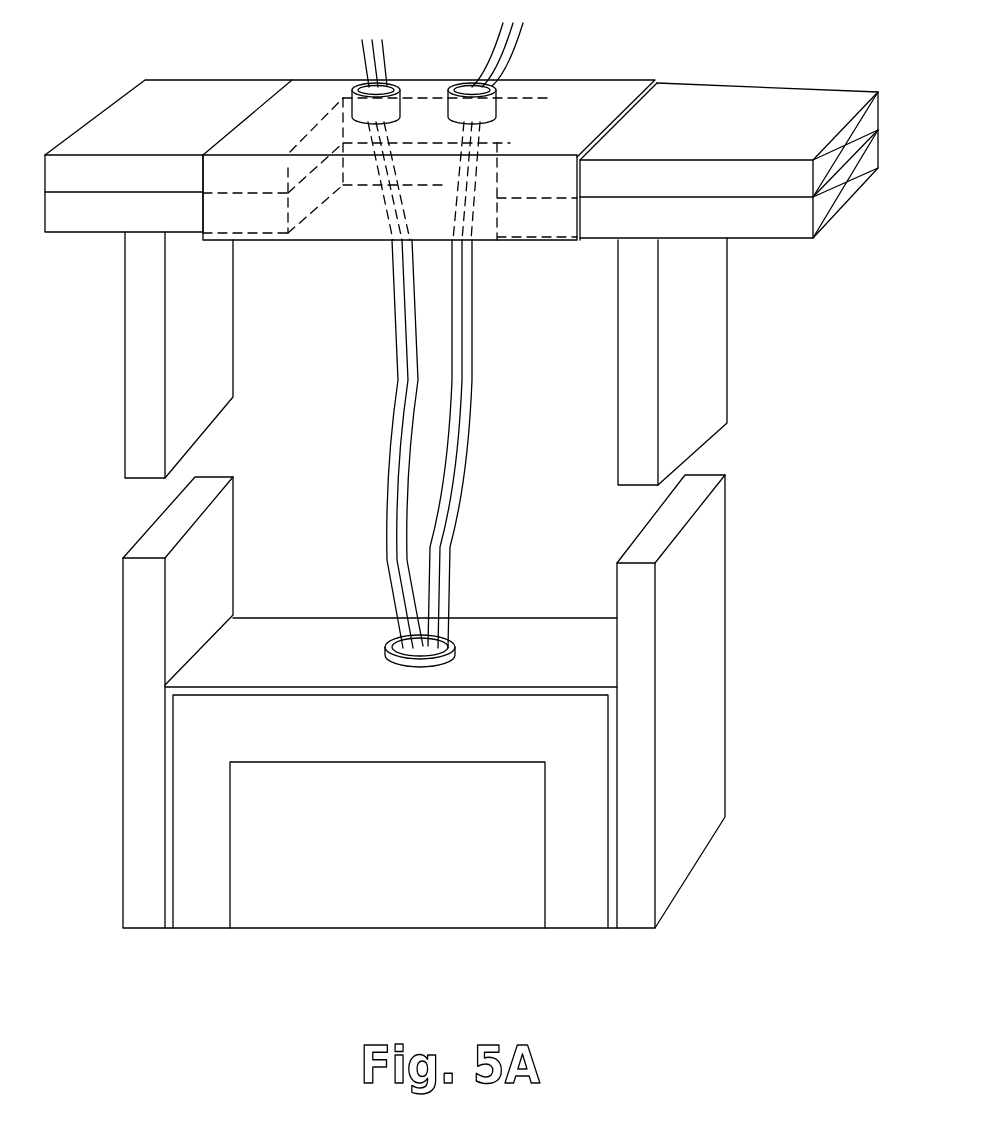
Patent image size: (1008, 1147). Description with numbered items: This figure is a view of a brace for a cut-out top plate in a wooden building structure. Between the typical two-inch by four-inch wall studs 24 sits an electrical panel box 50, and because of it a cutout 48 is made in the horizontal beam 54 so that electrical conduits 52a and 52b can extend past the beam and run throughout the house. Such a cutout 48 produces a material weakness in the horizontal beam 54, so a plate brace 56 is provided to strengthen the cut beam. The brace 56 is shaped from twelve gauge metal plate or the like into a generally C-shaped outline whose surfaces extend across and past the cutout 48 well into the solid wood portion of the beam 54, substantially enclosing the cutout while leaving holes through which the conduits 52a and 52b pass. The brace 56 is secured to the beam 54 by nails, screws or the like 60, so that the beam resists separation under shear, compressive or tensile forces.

The wall stud 24 is at (672, 347).
The cutout 48 is at (362, 233).
The electrical panel box 50 is at (389, 741).
The electrical conduit 52a is at (464, 476).
The electrical conduit 52b is at (389, 477).
The horizontal beam 54 is at (853, 184).
The plate brace 56 is at (513, 246).
The nails or screws 60 is at (576, 140).